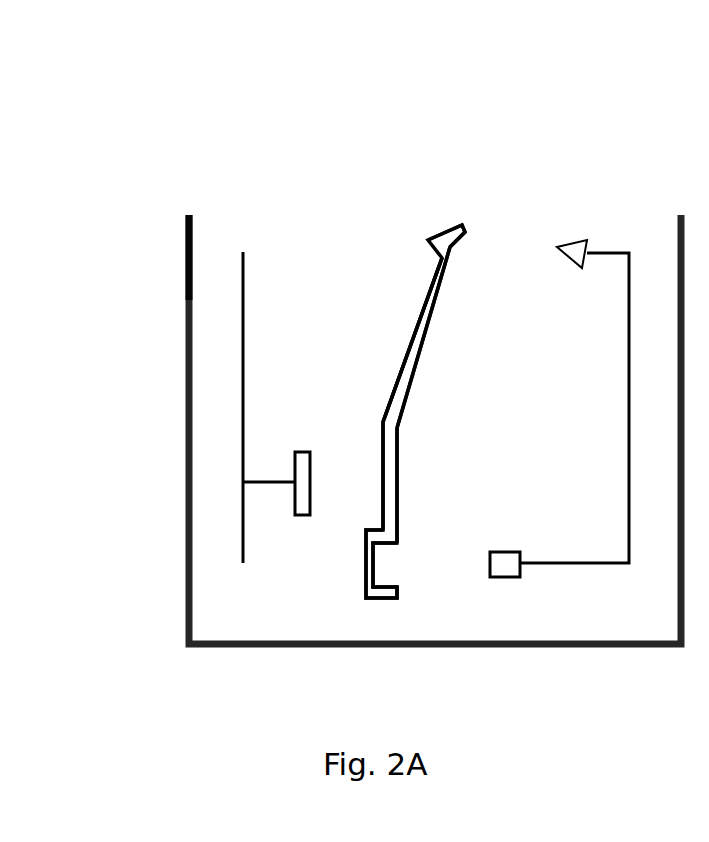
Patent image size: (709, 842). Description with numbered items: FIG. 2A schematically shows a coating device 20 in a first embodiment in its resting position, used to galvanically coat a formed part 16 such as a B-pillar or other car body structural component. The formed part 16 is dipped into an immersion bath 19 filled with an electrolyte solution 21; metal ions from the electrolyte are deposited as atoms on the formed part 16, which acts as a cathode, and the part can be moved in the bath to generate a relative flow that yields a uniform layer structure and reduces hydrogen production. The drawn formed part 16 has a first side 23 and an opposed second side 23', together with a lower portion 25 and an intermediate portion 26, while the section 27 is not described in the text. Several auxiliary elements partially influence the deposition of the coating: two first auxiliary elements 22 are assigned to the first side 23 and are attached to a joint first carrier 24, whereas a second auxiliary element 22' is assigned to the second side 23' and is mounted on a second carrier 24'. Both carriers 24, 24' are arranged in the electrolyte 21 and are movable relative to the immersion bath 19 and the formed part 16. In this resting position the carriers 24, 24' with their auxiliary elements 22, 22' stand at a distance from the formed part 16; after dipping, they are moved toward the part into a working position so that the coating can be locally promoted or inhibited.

The formed part 16 is at (432, 283).
The immersion bath 19 is at (185, 393).
The coating device 20 is at (445, 139).
The electrolyte solution 21 is at (200, 292).
The first auxiliary element 22 is at (539, 362).
The second auxiliary element 22' is at (285, 445).
The first side 23 is at (448, 337).
The second side 23' is at (392, 340).
The first carrier 24 is at (574, 408).
The second carrier 24' is at (285, 407).
The lower portion 25 is at (452, 249).
The intermediate portion 26 is at (366, 558).
The straight section 27 is at (398, 444).